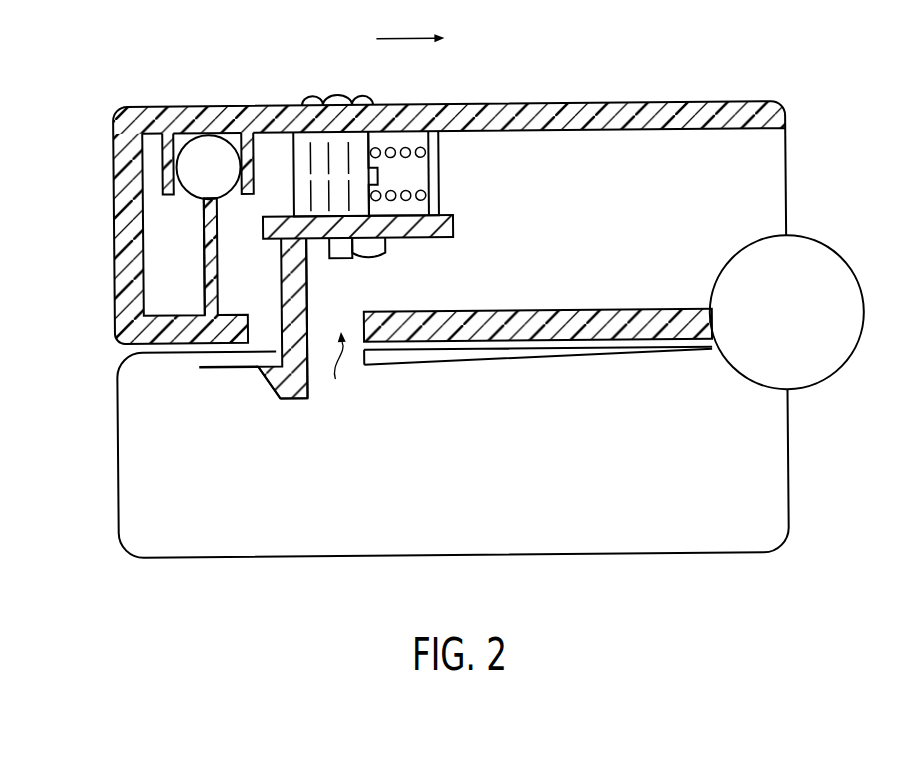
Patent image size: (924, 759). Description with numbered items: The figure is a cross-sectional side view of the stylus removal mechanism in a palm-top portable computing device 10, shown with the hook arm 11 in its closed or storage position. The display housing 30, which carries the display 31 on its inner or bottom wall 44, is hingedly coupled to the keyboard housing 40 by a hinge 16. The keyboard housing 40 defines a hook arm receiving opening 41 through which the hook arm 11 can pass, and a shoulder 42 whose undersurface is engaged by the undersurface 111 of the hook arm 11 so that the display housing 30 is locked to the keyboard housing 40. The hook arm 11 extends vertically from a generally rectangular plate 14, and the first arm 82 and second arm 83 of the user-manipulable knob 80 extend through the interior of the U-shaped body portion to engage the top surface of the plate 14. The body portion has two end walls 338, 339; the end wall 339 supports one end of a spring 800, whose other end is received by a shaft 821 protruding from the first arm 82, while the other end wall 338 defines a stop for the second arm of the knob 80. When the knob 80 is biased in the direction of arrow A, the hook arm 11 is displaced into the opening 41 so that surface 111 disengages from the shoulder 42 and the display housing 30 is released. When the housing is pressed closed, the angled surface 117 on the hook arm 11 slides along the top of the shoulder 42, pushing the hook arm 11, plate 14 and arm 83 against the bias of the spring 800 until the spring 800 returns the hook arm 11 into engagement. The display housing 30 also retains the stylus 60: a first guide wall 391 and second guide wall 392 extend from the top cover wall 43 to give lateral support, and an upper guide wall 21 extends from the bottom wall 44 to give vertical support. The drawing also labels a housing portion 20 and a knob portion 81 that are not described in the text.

The portable computing device 10 is at (846, 55).
The hook arm 11 is at (278, 401).
The plate 14 is at (453, 234).
The hinge 16 is at (833, 273).
The housing 20 is at (103, 275).
The upper guide wall 21 is at (205, 242).
The display housing 30 is at (617, 91).
The display 31 is at (540, 315).
The keyboard housing 40 is at (416, 372).
The hook arm receiving opening 41 is at (339, 379).
The shoulder 42 is at (307, 341).
The top cover wall 43 is at (141, 118).
The bottom wall 44 is at (236, 320).
The stylus 60 is at (208, 143).
The knob 80 is at (402, 116).
The coil bobbin 81 is at (375, 106).
The first arm 82 is at (383, 252).
The second arm 83 is at (327, 262).
The undersurface 111 is at (274, 362).
The angled surface 117 is at (266, 382).
The end wall 338 is at (302, 105).
The end wall 339 is at (431, 152).
The first guide wall 391 is at (161, 169).
The second guide wall 392 is at (287, 160).
The spring 800 is at (440, 139).
The shaft 821 is at (378, 176).